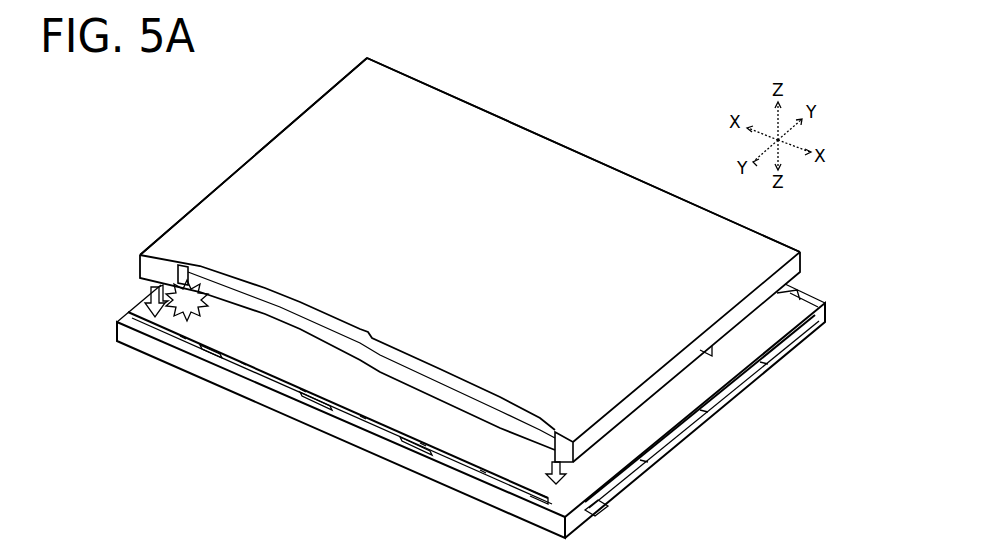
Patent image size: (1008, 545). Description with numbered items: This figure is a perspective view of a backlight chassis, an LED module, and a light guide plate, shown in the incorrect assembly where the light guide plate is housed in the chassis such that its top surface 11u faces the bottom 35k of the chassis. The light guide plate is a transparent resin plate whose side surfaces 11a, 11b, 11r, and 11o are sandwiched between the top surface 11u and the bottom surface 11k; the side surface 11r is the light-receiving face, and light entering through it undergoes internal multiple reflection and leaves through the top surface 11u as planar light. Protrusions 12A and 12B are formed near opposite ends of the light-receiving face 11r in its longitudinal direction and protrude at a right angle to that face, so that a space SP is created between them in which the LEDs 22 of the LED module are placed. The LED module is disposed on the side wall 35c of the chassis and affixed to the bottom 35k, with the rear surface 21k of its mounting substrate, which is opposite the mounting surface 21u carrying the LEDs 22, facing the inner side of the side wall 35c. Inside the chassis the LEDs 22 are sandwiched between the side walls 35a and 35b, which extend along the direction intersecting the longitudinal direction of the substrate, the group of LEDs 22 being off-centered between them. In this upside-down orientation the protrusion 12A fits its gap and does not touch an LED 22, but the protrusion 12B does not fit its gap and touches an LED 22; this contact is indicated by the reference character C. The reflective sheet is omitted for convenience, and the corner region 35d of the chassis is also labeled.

The side surface 11a is at (763, 303).
The side surface 11b is at (268, 142).
The side surface 11o is at (528, 130).
The bottom surface 11k is at (468, 236).
The side surface (light-receiving face) 11r is at (347, 352).
The top surface 11u is at (704, 350).
The protrusion 12A is at (577, 456).
The protrusion 12B is at (140, 253).
The rear surface 21k is at (437, 442).
The mounting surface 21u is at (540, 480).
The light emitting diodes (LEDs) 22 is at (458, 456).
The side wall 35a is at (130, 309).
The side wall 35b is at (700, 427).
The side wall 35c is at (338, 425).
The right corner of frame 35d is at (826, 303).
The bottom 35k is at (370, 394).
The contact C is at (187, 300).
The space SP is at (214, 296).